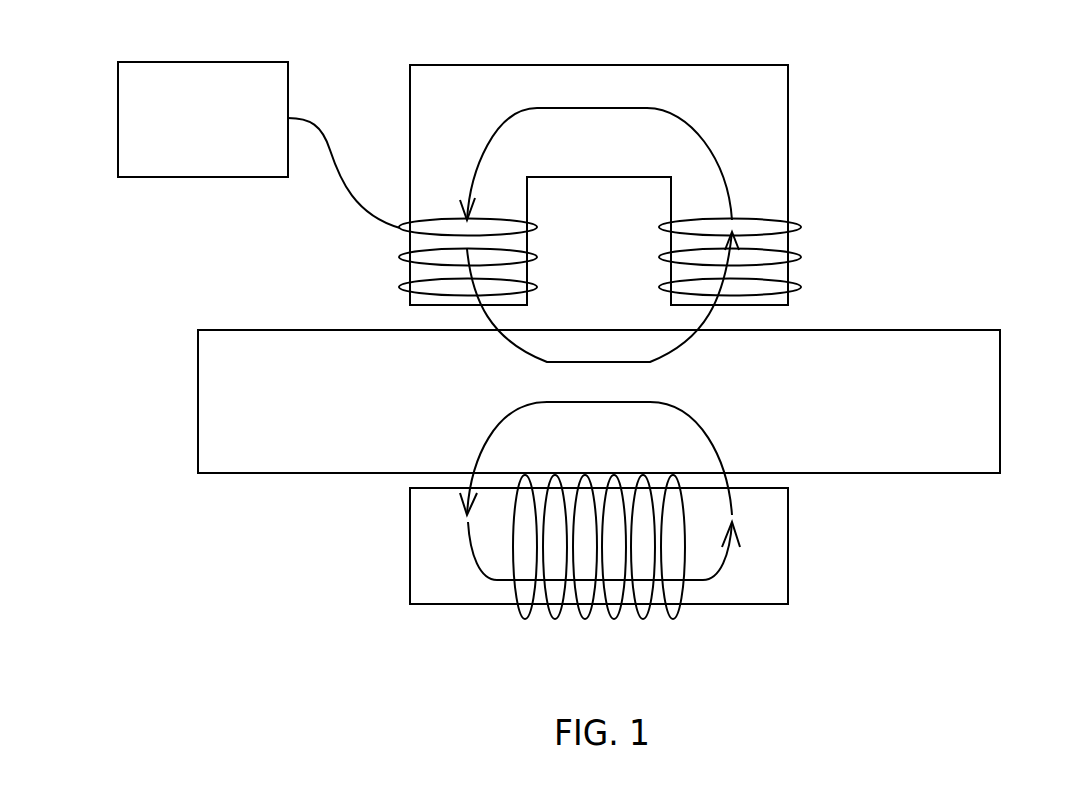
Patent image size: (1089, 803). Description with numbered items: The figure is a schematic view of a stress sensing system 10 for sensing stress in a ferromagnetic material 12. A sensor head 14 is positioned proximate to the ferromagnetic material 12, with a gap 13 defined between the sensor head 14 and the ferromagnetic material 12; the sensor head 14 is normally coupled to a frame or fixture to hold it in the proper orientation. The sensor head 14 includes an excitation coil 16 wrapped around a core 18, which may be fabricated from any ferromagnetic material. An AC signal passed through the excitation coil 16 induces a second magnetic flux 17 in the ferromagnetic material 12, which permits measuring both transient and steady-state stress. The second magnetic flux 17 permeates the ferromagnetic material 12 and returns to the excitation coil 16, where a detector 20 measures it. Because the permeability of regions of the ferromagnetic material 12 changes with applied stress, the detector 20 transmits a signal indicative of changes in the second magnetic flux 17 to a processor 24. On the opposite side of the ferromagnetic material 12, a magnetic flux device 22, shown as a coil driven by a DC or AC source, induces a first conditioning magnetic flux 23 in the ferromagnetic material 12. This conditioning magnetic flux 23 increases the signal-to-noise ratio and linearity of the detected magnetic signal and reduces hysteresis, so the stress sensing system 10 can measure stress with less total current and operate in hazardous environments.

The stress sensing system 10 is at (972, 103).
The ferromagnetic material 12 is at (957, 330).
The gap 13 is at (785, 318).
The sensor head 14 is at (750, 62).
The excitation coil 16 is at (400, 257).
The second magnetic flux 17 is at (500, 343).
The core 18 is at (473, 65).
The detector 20 is at (800, 285).
The magnetic flux device 22 is at (433, 538).
The first conditioning magnetic flux 23 is at (717, 447).
The processor 24 is at (118, 85).